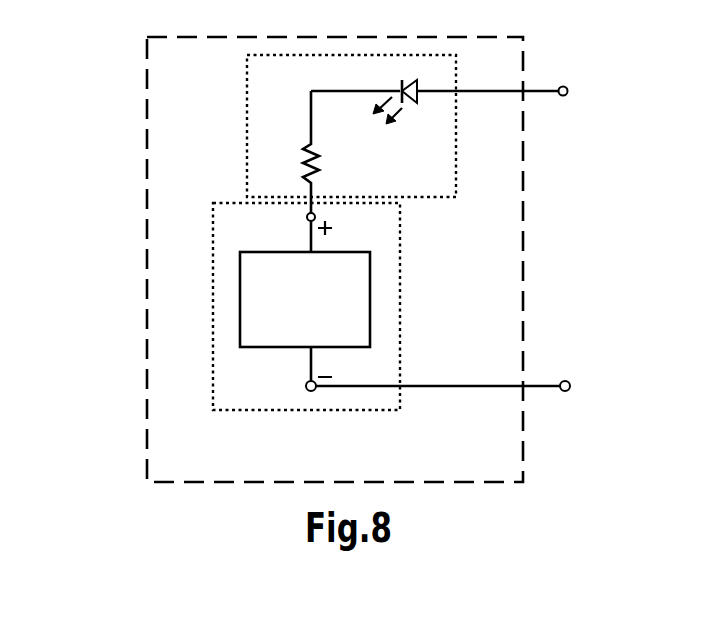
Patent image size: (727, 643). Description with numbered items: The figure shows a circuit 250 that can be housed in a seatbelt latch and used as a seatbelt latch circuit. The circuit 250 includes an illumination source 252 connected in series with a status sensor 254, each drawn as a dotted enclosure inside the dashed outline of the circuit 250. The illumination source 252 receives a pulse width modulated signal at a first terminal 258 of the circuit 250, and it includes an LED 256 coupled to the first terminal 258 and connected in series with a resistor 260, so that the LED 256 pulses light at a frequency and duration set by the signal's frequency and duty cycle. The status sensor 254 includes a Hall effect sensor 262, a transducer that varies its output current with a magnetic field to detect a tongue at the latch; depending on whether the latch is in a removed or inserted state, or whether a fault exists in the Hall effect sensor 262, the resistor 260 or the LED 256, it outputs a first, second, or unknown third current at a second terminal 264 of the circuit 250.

The circuit 250 is at (145, 68).
The illumination source 252 is at (456, 174).
The status sensor 254 is at (400, 316).
The LED 256 is at (415, 103).
The first terminal 258 is at (566, 87).
The resistor R1 260 is at (305, 148).
The Hall effect sensor 262 is at (300, 250).
The second terminal 264 is at (568, 380).